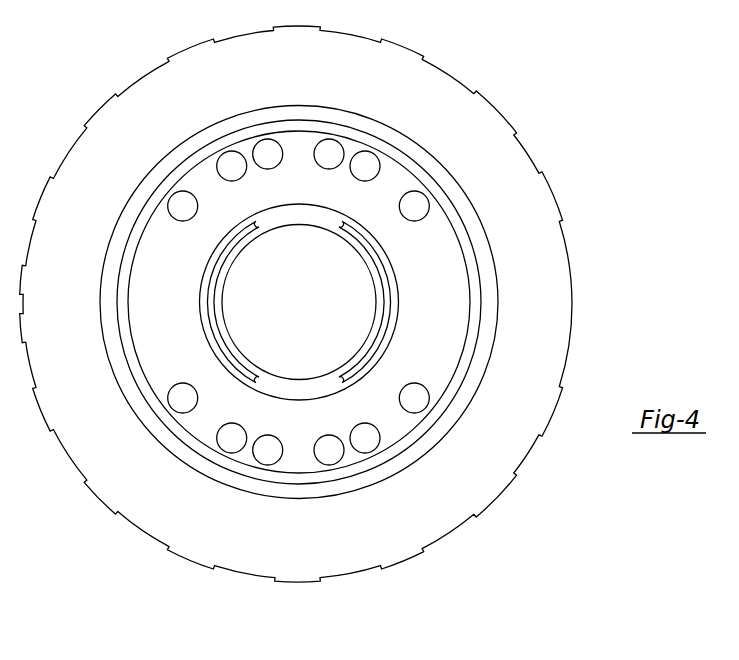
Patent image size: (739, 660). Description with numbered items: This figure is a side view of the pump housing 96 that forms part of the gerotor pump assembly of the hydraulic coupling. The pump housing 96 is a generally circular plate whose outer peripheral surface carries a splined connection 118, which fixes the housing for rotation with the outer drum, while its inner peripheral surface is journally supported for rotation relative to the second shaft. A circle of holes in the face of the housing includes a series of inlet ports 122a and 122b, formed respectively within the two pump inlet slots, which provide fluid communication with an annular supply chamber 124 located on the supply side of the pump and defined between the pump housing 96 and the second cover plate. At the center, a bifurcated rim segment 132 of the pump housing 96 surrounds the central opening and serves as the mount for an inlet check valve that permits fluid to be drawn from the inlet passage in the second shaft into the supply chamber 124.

The pump housing 96 is at (183, 503).
The splined connection 118 is at (558, 197).
The inlet port 122a is at (337, 148).
The inlet port 122b is at (330, 455).
The annular supply chamber 124 is at (441, 290).
The bifurcated rim segment 132 is at (383, 310).